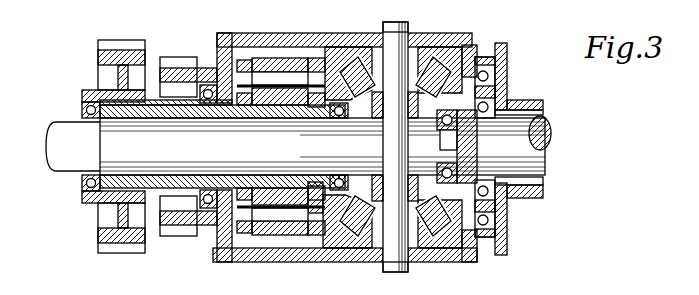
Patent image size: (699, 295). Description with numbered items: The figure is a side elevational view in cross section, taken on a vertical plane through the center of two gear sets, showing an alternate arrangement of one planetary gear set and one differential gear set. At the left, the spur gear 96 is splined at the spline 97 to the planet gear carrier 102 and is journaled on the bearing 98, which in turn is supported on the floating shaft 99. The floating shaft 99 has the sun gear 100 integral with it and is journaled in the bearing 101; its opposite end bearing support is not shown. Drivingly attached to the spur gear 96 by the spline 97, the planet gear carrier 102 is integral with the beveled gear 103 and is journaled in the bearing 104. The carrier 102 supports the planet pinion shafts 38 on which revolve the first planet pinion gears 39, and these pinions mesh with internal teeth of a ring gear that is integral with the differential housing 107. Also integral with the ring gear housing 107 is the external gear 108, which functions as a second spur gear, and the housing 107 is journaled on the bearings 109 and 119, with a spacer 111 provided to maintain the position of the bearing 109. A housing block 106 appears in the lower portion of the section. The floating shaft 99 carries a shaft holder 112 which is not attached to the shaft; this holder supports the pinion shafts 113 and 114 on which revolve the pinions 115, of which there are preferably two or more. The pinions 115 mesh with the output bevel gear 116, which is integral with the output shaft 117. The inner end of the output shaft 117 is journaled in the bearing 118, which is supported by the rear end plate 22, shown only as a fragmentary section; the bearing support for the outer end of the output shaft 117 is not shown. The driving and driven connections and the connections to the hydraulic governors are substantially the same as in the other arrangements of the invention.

The rear end plate 22 is at (528, 100).
The planet pinion shafts 38 is at (285, 76).
The first planet pinion gears 39 is at (270, 58).
The spur gear 96 is at (98, 57).
The spline 97 is at (98, 92).
The bearing 98 is at (84, 108).
The floating shaft 99 is at (52, 137).
The sun gear 100 is at (284, 120).
The bearing 101 is at (437, 120).
The planet gear carrier 102 is at (243, 60).
The beveled gear 103 is at (340, 218).
The bearing 104 is at (339, 118).
The housing block 106 is at (286, 240).
The differential housing 107 is at (325, 40).
The external gear 108 is at (168, 60).
The bearing 109 is at (204, 82).
The spacer 111 is at (153, 99).
The shaft holder 112 is at (489, 220).
The pinion shaft 113 is at (392, 24).
The pinion shaft 114 is at (405, 272).
The pinions 115 is at (425, 30).
The output bevel gear 116 is at (450, 45).
The output shaft 117 is at (552, 134).
The bearing 118 is at (507, 63).
The bearing 119 is at (484, 70).